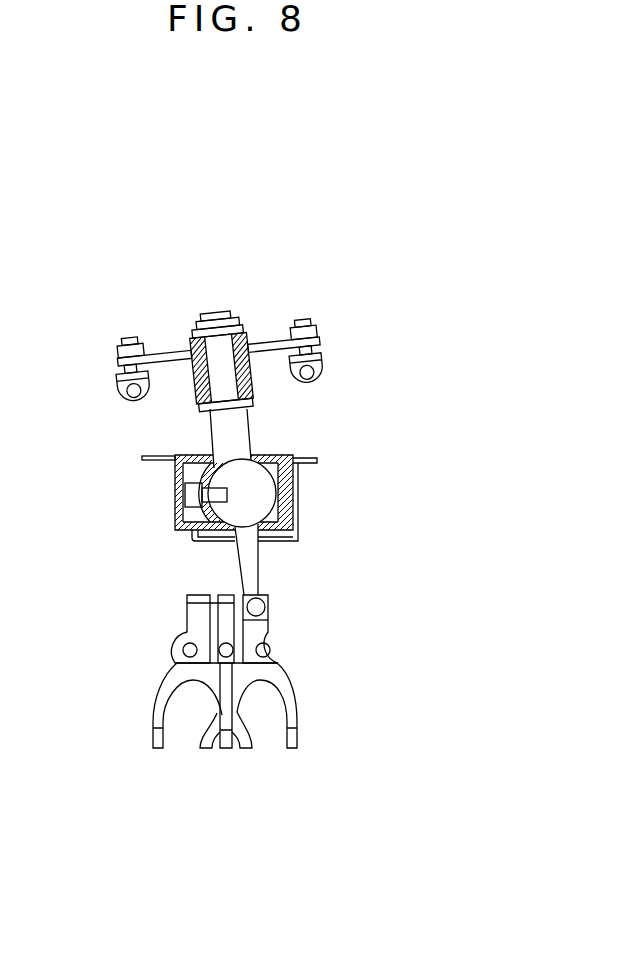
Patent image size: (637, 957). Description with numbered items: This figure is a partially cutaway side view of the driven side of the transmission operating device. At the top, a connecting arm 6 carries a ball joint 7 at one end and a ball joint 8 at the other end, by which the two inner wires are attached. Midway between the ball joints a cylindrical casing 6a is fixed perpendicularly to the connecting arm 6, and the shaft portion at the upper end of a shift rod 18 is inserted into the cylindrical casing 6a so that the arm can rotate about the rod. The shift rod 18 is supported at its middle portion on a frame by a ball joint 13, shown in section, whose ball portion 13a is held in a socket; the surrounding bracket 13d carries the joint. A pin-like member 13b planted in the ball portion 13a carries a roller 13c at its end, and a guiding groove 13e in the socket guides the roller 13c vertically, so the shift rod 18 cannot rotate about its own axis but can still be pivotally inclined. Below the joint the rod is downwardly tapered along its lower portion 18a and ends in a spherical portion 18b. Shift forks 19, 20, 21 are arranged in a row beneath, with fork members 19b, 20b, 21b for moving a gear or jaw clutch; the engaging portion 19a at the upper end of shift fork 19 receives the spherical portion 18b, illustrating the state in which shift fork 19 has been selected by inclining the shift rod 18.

The connecting arm 6 is at (168, 350).
The cylindrical casing 6a is at (203, 398).
The ball joint 7 is at (130, 383).
The ball joint 8 is at (322, 353).
The ball joint 13 is at (271, 490).
The ball portion 13a is at (251, 463).
The pin-like member 13b is at (191, 490).
The roller 13c is at (178, 508).
The mounting bracket 13d is at (297, 509).
The guiding groove 13e is at (186, 467).
The shift rod 18 is at (244, 424).
The lower rod portion 18a is at (257, 568).
The spherical portion 18b is at (262, 604).
The shift fork 19 is at (276, 655).
The engaging portion 19a is at (268, 618).
The fork member 19b is at (293, 705).
The shift fork 20 is at (225, 612).
The fork member 20b is at (247, 745).
The shift fork 21 is at (176, 650).
The fork member 21b is at (156, 739).